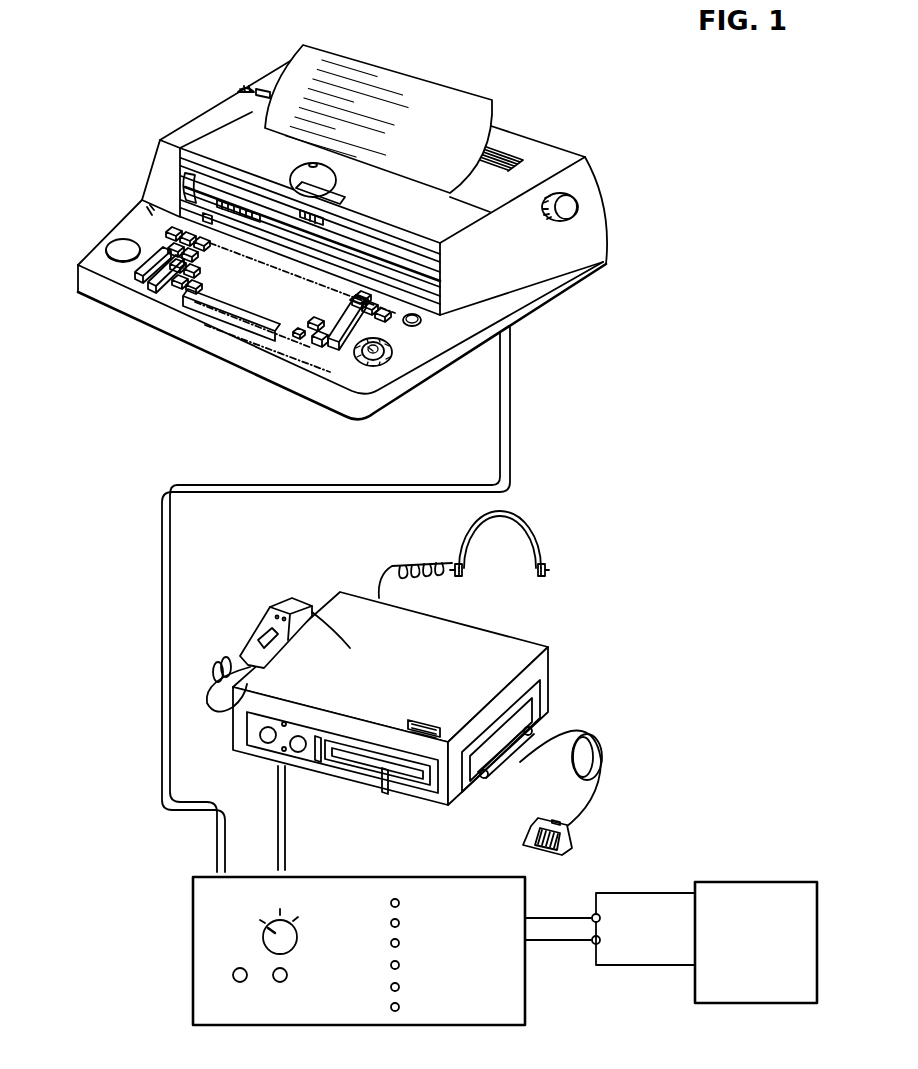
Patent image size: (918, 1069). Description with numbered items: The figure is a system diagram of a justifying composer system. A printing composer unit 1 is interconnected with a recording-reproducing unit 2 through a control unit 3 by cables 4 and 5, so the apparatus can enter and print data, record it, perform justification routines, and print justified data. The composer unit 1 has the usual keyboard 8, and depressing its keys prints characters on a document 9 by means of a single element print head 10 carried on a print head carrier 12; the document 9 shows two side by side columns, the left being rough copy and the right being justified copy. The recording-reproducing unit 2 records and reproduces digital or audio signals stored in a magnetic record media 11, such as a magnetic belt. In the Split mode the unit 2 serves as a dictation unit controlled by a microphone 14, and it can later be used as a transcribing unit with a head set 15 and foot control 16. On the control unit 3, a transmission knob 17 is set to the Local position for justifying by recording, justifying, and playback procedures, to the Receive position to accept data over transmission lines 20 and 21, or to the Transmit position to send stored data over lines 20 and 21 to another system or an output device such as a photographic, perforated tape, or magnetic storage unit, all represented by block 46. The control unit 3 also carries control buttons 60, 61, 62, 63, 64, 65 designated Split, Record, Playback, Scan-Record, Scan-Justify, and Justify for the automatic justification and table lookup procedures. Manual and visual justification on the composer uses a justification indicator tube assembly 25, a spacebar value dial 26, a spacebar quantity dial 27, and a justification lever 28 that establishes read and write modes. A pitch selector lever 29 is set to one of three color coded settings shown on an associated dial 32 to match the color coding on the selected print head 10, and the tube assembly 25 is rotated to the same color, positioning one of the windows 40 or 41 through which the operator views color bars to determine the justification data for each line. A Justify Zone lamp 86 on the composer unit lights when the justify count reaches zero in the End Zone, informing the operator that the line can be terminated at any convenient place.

The printing composer unit 1 is at (598, 222).
The recording-reproducing unit 2 is at (518, 652).
The control unit 3 is at (372, 885).
The cable 4 is at (345, 485).
The cable 5 is at (286, 838).
The keyboard 8 is at (160, 300).
The document 9 is at (432, 80).
The single element print head 10 is at (283, 177).
The magnetic record media 11 is at (508, 733).
The print head carrier 12 is at (258, 136).
The microphone 14 is at (266, 617).
The head set 15 is at (540, 553).
The foot control 16 is at (567, 832).
The transmission knob 17 is at (292, 940).
The transmission line 20 is at (600, 918).
The transmission line 21 is at (600, 940).
The justification indicator tube assembly 25 is at (166, 183).
The spacebar value dial 26 is at (345, 312).
The spacebar quantity dial 27 is at (360, 365).
The justification lever 28 is at (384, 364).
The pitch selector lever 29 is at (262, 86).
The dial 32 is at (270, 88).
The window 40 is at (228, 200).
The window 41 is at (340, 222).
The block 46 is at (743, 883).
The Split control button 60 is at (391, 906).
The Record control button 61 is at (392, 926).
The Playback control button 62 is at (392, 946).
The Scan-Record control button 63 is at (392, 968).
The Scan-Justify control button 64 is at (393, 990).
The Justify control button 65 is at (397, 1010).
The Justify Zone lamp 86 is at (422, 318).